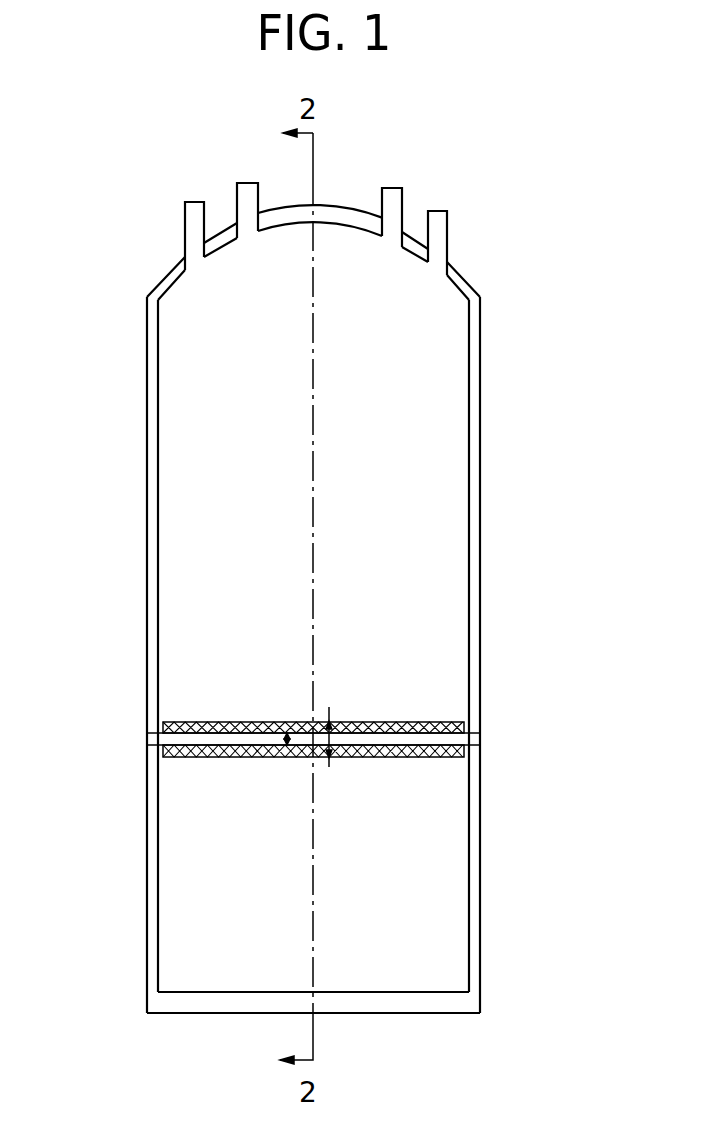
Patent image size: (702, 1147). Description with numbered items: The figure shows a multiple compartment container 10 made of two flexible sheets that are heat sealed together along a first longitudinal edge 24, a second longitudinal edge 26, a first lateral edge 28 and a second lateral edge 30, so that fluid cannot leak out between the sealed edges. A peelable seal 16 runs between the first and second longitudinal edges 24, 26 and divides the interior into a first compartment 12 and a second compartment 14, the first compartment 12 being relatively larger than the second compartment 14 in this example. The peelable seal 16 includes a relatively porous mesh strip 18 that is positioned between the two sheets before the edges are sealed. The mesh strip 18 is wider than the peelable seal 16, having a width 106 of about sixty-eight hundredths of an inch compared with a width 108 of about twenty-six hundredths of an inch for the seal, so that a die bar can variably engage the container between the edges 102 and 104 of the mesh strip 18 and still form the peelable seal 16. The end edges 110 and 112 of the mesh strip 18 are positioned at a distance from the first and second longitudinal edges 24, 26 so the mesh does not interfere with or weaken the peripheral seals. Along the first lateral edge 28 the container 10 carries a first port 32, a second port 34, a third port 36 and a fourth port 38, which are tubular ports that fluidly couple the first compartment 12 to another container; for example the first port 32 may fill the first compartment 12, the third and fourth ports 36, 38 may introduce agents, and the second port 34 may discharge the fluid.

The multiple compartment container 10 is at (306, 597).
The first compartment 12 is at (313, 597).
The second compartment 14 is at (336, 911).
The peelable seal 16 is at (313, 778).
The mesh strip 18 is at (313, 700).
The first longitudinal edge 24 is at (147, 463).
The second longitudinal edge 26 is at (480, 360).
The first lateral edge 28 is at (340, 207).
The second lateral edge 30 is at (406, 1013).
The first port 32 is at (191, 202).
The second port 34 is at (246, 183).
The third port 36 is at (390, 188).
The fourth port 38 is at (437, 211).
The edge of the mesh strip 102 is at (196, 722).
The edge of the mesh strip 104 is at (197, 757).
The width of the mesh strip 106 is at (287, 733).
The width of the peelable seal 108 is at (330, 712).
The edge of the mesh strip 110 is at (480, 731).
The edge of the mesh strip 112 is at (158, 756).